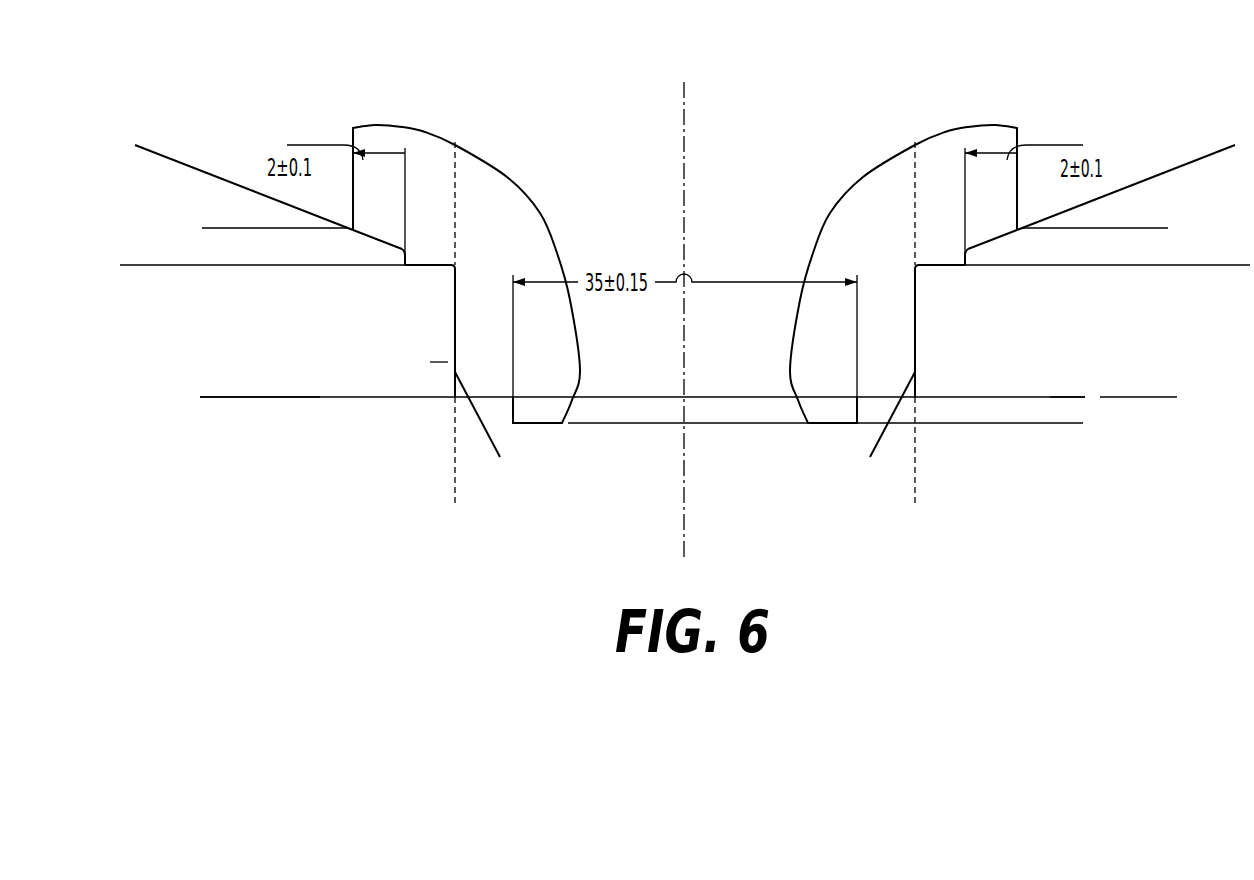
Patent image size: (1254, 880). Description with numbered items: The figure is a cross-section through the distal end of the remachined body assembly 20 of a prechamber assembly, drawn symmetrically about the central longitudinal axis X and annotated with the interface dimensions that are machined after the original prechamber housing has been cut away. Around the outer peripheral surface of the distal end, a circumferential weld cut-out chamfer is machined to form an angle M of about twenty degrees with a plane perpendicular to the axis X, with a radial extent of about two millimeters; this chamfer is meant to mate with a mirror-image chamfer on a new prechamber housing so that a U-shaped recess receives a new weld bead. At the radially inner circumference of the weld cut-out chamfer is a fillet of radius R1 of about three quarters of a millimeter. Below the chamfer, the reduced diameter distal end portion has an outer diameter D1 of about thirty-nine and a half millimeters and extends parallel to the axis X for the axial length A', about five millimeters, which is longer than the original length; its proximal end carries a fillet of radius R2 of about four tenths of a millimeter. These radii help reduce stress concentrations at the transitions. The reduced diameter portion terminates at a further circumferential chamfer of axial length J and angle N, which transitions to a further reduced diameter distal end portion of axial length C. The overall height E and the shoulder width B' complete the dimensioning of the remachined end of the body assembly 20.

The body assembly 20 is at (386, 127).
The fillet radius R1 is at (407, 247).
The fillet radius R2 is at (458, 267).
The chamfer angle N is at (478, 462).
The weld cut-out chamfer angle M is at (148, 157).
The dimension E is at (212, 230).
The axial length of reduced diameter distal end portion A' is at (642, 332).
The chamfer axial length J is at (438, 328).
The axial length of further reduced diameter distal end portion C is at (1075, 410).
The dimension B' is at (685, 203).
The outer diameter of reduced diameter distal end portion D1 is at (455, 491).
The central longitudinal axis X is at (684, 303).